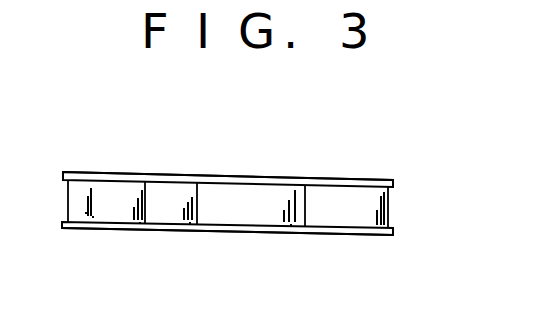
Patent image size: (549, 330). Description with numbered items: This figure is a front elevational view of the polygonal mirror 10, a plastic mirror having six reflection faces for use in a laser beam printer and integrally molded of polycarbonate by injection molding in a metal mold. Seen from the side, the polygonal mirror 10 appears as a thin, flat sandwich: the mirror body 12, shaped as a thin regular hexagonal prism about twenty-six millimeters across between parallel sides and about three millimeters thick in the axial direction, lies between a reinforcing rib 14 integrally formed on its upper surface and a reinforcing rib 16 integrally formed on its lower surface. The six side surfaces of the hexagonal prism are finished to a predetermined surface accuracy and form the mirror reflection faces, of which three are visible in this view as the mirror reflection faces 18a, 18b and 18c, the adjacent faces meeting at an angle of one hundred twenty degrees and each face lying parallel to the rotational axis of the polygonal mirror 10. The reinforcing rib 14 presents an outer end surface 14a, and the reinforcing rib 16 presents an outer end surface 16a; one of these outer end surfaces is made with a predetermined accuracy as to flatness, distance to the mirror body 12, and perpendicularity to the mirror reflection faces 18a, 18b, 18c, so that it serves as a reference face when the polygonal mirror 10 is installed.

The polygonal mirror 10 is at (255, 212).
The mirror body 12 is at (219, 185).
The reinforcing rib 14 is at (393, 184).
The outer end surface 14a is at (365, 180).
The reinforcing rib 16 is at (393, 234).
The outer end surface 16a is at (368, 234).
The mirror reflection face 18a is at (105, 215).
The mirror reflection face 18b is at (223, 217).
The mirror reflection face 18c is at (337, 218).